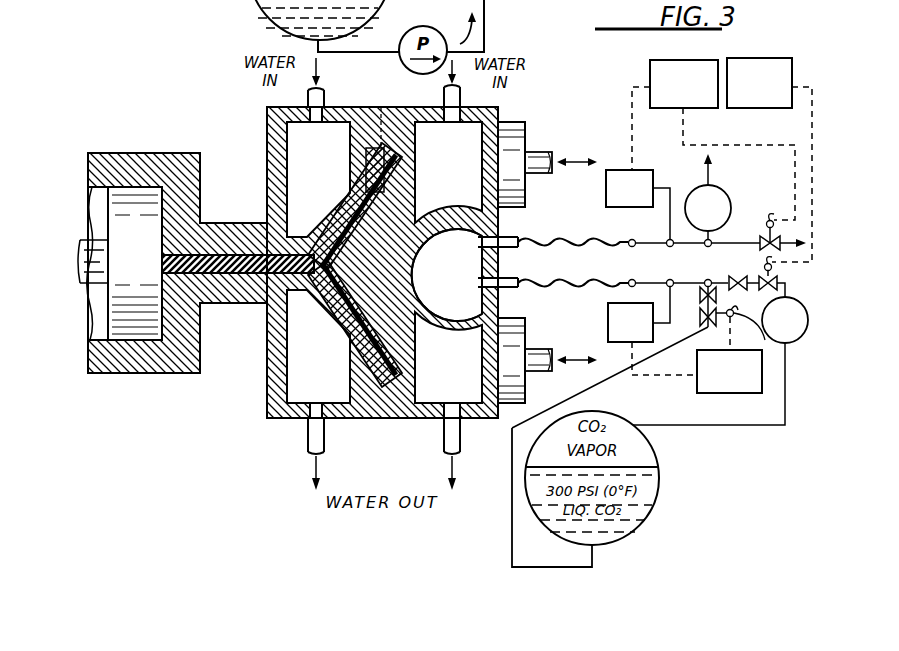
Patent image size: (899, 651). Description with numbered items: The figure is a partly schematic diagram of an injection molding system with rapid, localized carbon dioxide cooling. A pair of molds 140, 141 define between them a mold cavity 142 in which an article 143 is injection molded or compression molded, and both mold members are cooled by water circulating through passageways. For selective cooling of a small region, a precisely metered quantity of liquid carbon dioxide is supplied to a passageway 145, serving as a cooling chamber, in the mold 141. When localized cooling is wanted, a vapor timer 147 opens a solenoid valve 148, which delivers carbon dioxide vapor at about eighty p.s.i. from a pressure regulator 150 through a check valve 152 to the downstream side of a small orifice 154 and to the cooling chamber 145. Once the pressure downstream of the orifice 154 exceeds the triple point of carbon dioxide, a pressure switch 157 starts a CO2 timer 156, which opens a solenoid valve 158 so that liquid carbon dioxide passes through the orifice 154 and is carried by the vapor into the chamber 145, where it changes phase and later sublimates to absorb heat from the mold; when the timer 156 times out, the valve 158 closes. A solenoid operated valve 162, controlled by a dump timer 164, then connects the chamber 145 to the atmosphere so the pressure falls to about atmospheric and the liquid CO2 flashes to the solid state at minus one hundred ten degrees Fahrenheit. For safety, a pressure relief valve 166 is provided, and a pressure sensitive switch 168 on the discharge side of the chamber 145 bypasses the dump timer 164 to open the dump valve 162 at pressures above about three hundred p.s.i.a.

The mold 140 is at (267, 118).
The mold 141 is at (498, 114).
The mold cavity 142 is at (400, 160).
The article 143 is at (398, 196).
The passageway 145 is at (482, 262).
The vapor timer 147 is at (772, 60).
The solenoid valve 148 is at (778, 281).
The pressure regulator 150 is at (803, 310).
The check valve 152 is at (744, 278).
The orifice 154 is at (702, 280).
The CO2 timer 156 is at (762, 370).
The pressure switch 157 is at (608, 323).
The solenoid valve 158 is at (772, 342).
The solenoid operated valve 162 is at (778, 238).
The dump timer 164 is at (650, 72).
The pressure relief valve 166 is at (727, 200).
The pressure sensitive switch 168 is at (606, 192).